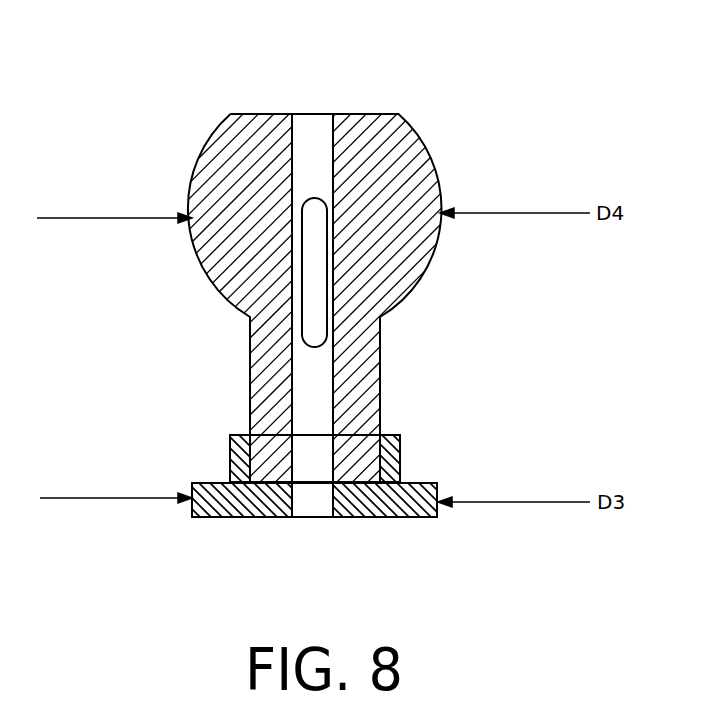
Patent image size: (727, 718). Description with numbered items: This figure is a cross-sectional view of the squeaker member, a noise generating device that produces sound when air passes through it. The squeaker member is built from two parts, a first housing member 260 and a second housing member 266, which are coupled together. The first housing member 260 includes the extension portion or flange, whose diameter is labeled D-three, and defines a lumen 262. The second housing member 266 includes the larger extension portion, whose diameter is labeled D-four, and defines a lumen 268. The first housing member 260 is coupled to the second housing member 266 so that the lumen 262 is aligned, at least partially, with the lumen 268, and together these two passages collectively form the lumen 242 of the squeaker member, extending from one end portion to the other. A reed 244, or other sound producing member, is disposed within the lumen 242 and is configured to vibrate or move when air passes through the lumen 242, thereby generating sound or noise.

The lumen 242 is at (313, 127).
The reed 244 is at (315, 316).
The second housing member 266 is at (248, 372).
The lumen 268 is at (318, 400).
The first housing member 260 is at (212, 513).
The lumen 262 is at (317, 498).